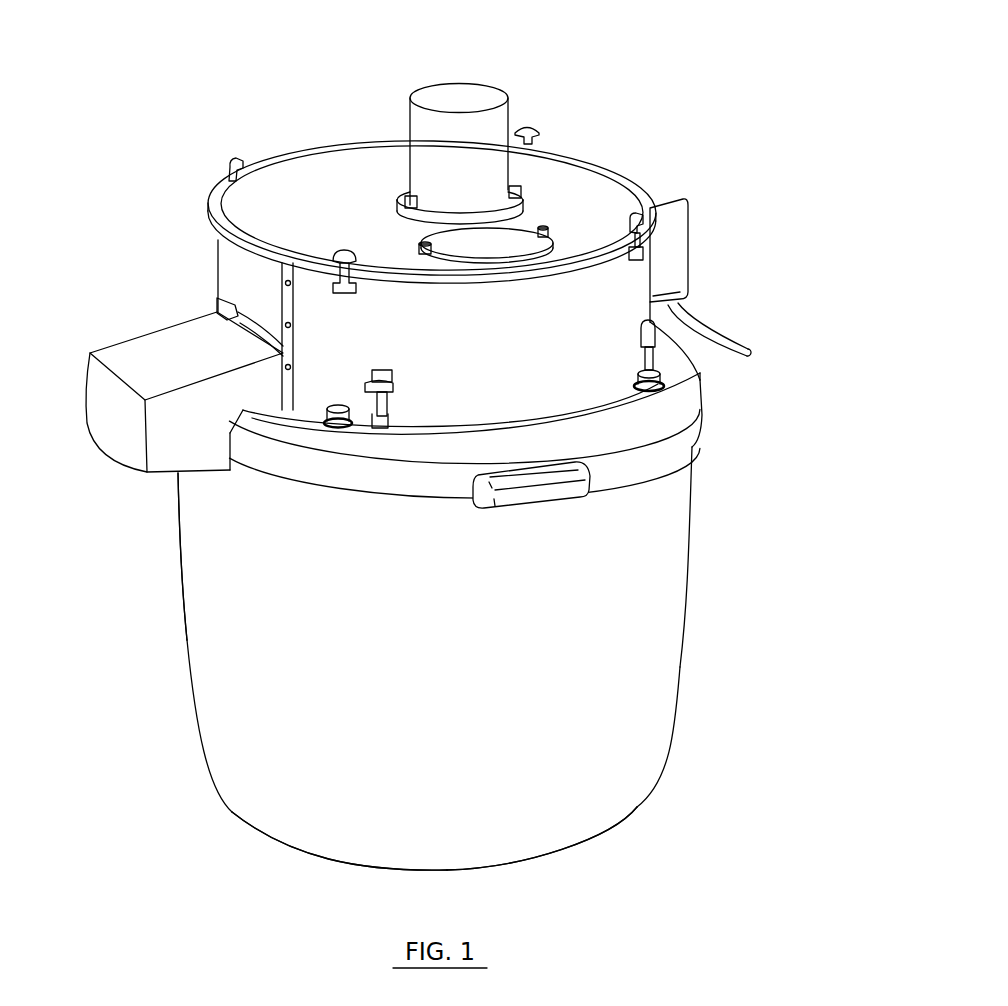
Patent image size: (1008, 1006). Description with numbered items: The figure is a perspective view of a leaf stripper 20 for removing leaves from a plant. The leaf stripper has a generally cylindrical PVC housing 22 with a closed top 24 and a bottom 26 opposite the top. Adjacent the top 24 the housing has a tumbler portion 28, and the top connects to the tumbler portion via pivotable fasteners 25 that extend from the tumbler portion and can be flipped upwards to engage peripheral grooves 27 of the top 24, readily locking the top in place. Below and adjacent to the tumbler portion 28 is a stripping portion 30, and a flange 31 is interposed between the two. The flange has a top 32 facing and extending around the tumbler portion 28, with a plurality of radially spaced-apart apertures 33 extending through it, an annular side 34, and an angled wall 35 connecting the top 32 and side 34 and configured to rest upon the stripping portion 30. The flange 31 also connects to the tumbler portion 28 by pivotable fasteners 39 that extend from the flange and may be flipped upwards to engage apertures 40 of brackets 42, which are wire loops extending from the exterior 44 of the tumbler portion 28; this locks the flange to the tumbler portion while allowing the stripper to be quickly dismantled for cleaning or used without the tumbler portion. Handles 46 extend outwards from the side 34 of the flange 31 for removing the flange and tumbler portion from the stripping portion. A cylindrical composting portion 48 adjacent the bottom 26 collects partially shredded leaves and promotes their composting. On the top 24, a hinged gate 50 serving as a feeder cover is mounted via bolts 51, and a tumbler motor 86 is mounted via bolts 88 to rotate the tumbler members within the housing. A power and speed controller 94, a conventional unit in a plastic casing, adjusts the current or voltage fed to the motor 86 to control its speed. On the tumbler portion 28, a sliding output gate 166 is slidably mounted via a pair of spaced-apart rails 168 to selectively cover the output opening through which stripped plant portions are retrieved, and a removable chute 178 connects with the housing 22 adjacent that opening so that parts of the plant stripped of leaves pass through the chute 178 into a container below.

The leaf stripper 20 is at (648, 100).
The housing 22 is at (713, 560).
The top 24 is at (352, 167).
The pivotable fasteners 25 is at (352, 258).
The bottom 26 is at (560, 856).
The peripheral grooves 27 is at (333, 266).
The tumbler portion 28 is at (582, 377).
The stripping portion 30 is at (210, 557).
The flange 31 is at (684, 430).
The top 32 is at (673, 362).
The apertures 33 is at (694, 383).
The annular side 34 is at (412, 494).
The angled wall 35 is at (691, 371).
The pivotable fasteners 39 is at (398, 390).
The apertures 40 is at (367, 400).
The brackets 42 is at (380, 375).
The exterior 44 is at (500, 344).
The handles 46 is at (513, 498).
The composting portion 48 is at (263, 783).
The hinged gate 50 is at (517, 237).
The bolts 51 is at (548, 227).
The tumbler motor 86 is at (463, 97).
The bolts 88 is at (523, 195).
The power and speed controller 94 is at (680, 258).
The output gate 166 is at (212, 305).
The rails 168 is at (283, 348).
The removable chute 178 is at (113, 357).